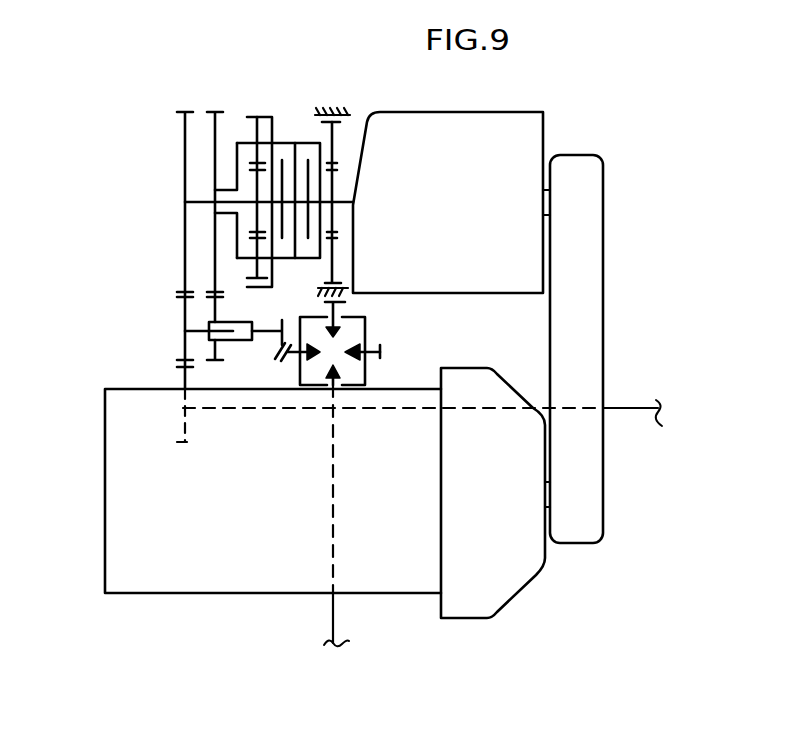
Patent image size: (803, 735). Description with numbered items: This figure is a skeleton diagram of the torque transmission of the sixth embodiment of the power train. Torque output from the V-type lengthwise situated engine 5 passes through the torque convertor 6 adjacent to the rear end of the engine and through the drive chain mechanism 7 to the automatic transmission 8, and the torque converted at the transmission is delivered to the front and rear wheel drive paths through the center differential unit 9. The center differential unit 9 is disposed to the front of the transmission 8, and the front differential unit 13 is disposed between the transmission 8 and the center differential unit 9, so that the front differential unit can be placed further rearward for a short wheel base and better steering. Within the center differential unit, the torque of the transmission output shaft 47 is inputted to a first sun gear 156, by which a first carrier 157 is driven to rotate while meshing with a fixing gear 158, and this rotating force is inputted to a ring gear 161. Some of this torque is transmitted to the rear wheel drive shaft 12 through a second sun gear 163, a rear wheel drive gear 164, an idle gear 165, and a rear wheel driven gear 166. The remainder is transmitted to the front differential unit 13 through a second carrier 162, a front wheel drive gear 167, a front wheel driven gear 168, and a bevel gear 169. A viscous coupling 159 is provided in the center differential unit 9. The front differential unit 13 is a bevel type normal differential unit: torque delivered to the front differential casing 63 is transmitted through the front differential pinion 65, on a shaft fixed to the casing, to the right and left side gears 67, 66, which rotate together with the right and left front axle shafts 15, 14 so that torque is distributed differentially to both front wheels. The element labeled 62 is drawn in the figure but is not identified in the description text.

The engine 5 is at (105, 593).
The torque convertor 6 is at (515, 593).
The drive chain mechanism 7 is at (605, 268).
The automatic transmission 8 is at (545, 112).
The center differential unit 9 is at (267, 101).
The rear wheel drive shaft 12 is at (642, 410).
The front differential unit 13 is at (393, 320).
The left front axle shaft 14 is at (335, 613).
The right front axle shaft 15 is at (346, 310).
The transmission output shaft 47 is at (343, 200).
The side shaft 62 is at (380, 356).
The front differential casing 63 is at (365, 373).
The front differential pinion 65 is at (302, 368).
The left side gear 66 is at (318, 388).
The right side gear 67 is at (350, 330).
The first sun gear 156 is at (338, 226).
The first carrier 157 is at (322, 123).
The fixing gear 158 is at (335, 107).
The viscous coupling 159 is at (295, 142).
The ring gear 161 is at (252, 113).
The second carrier 162 is at (256, 121).
The second sun gear 163 is at (252, 172).
The rear wheel drive gear 164 is at (180, 290).
The idle gear 165 is at (182, 298).
The rear wheel driven gear 166 is at (183, 442).
The front wheel drive gear 167 is at (215, 111).
The front wheel driven gear 168 is at (209, 366).
The bevel gear 169 is at (284, 316).